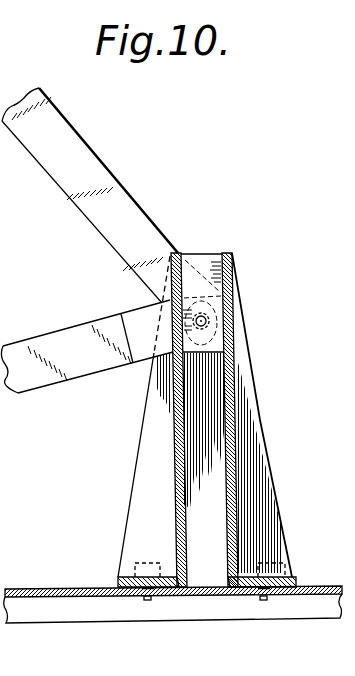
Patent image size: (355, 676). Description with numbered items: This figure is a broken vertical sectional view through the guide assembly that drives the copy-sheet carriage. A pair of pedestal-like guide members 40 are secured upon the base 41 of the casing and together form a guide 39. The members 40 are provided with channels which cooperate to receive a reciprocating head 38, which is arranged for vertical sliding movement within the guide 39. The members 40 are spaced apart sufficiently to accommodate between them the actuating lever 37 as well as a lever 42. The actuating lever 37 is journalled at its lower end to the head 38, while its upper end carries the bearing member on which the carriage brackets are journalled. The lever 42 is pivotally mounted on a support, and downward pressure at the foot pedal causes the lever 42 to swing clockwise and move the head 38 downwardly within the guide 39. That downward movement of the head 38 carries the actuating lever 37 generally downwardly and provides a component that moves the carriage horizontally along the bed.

The actuating lever 37 is at (100, 170).
The reciprocating head 38 is at (205, 262).
The guide 39 is at (256, 450).
The pedestal-like guide members 40 is at (135, 466).
The base 41 is at (222, 590).
The lever 42 is at (33, 380).